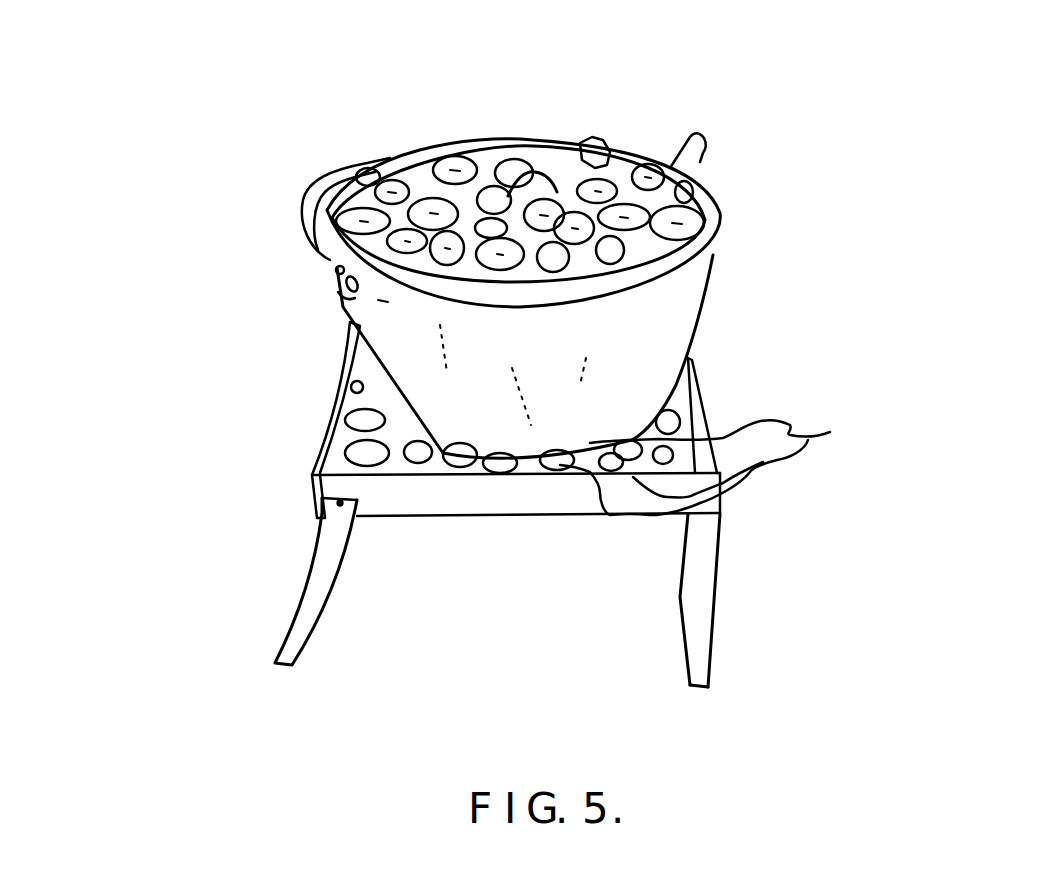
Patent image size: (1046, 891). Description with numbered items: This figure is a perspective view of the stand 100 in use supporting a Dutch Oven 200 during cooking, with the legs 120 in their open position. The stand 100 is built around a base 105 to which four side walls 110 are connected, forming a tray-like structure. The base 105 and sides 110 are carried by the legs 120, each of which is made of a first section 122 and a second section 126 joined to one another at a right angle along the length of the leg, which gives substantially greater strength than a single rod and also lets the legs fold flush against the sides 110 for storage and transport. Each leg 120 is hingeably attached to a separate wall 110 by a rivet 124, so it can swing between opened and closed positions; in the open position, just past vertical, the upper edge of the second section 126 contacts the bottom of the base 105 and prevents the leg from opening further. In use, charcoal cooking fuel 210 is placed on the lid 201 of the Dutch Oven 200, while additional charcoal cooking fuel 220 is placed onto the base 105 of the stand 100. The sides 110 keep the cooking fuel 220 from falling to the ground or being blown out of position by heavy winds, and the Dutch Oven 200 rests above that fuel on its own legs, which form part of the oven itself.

The stand 100 is at (271, 287).
The base 105 is at (392, 430).
The side walls 110 is at (345, 350).
The legs 120 is at (337, 598).
The first section 122 is at (720, 558).
The rivet 124 is at (340, 500).
The second section 126 is at (687, 557).
The Dutch Oven 200 is at (722, 270).
The lid 201 is at (716, 143).
The charcoal cooking fuel 210 is at (397, 193).
The charcoal cooking fuel 220 is at (830, 432).